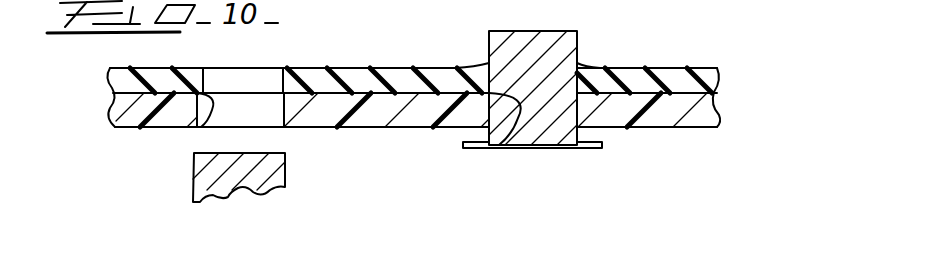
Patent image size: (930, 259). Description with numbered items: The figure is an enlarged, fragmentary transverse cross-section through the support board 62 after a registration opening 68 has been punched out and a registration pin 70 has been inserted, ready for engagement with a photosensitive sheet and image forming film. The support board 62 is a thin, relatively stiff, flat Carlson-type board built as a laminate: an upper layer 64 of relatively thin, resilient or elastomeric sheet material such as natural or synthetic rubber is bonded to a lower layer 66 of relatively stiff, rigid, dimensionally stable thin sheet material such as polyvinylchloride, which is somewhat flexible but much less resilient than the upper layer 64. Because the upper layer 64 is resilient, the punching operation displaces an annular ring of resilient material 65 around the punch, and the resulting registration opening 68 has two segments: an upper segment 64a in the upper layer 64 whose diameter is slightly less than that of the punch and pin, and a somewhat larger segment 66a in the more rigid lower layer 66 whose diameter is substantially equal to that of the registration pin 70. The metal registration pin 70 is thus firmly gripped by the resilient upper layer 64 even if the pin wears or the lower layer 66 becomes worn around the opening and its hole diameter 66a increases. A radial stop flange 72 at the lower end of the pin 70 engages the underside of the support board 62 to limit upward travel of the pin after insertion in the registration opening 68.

The support board 62 is at (104, 91).
The upper layer 64 is at (648, 68).
The upper segment of registration opening 64a is at (285, 88).
The displaced annular ring of resilient material 65 is at (582, 67).
The lower layer 66 is at (690, 128).
The lower segment of registration opening 66a is at (283, 110).
The registration opening 68 is at (204, 128).
The registration pin 70 is at (503, 31).
The radial stop flange 72 is at (603, 145).